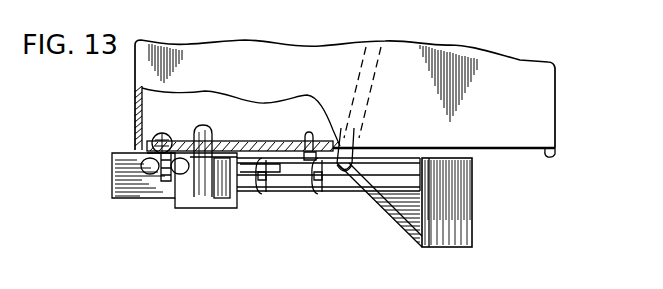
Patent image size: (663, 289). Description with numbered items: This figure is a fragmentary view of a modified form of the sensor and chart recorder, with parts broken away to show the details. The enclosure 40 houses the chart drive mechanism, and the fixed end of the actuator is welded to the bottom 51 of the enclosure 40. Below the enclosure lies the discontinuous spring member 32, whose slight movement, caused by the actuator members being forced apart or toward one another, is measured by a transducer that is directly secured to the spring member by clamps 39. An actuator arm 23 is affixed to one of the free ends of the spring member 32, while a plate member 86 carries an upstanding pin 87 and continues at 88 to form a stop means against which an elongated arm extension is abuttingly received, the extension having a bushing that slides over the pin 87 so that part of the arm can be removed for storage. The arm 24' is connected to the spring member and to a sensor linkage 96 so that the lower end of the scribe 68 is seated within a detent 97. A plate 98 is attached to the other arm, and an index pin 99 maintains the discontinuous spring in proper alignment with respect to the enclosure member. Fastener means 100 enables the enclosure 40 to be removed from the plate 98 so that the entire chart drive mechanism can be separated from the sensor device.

The enclosure 40 is at (560, 89).
The bottom of the enclosure 51 is at (559, 154).
The upstanding pin 87 is at (203, 126).
The plate 98 is at (273, 139).
The index pin 99 is at (311, 134).
The scribe 68 is at (362, 143).
The fastener means 100 is at (144, 182).
The stop means 88 is at (132, 202).
The plate member 86 is at (208, 204).
The spring member 32 is at (248, 186).
The clamps 39 is at (306, 185).
The detent 97 is at (345, 174).
The sensor linkage 96 is at (408, 210).
The actuator arm 23 is at (478, 192).
The arm 24' is at (516, 213).